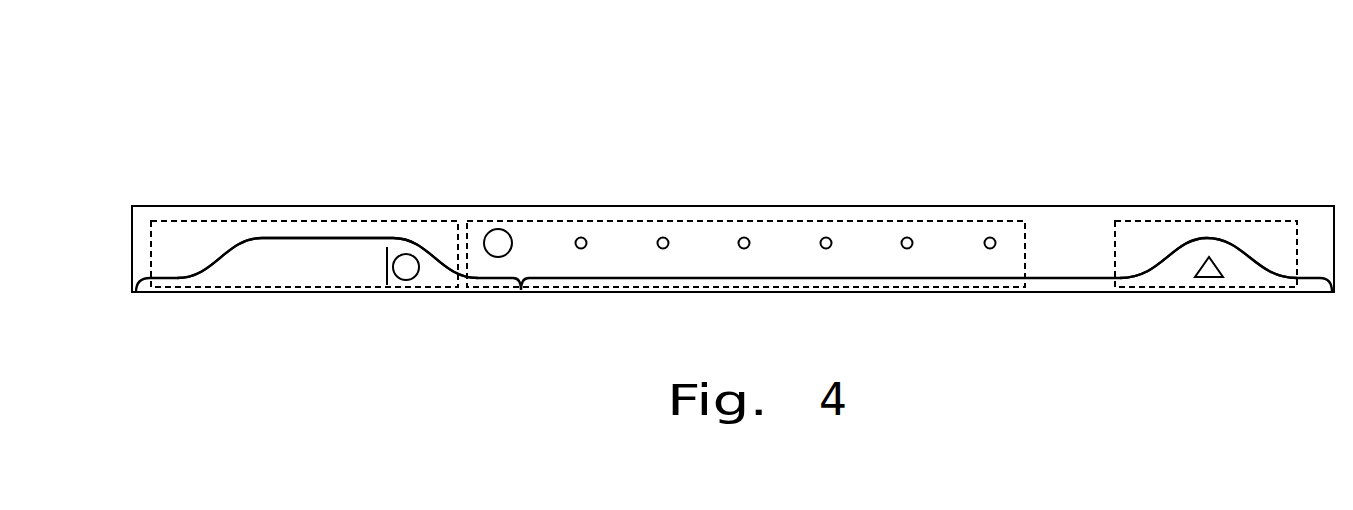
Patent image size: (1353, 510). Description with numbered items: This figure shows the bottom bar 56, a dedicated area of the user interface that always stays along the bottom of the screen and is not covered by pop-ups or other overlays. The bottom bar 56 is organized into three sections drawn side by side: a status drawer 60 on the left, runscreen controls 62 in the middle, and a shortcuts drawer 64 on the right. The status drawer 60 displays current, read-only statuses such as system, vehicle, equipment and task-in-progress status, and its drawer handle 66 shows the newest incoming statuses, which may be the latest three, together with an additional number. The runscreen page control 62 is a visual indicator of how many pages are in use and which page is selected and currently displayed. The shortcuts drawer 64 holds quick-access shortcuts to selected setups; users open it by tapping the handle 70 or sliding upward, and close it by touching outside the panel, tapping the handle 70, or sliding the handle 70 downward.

The bottom bar 56 is at (805, 137).
The status drawer 60 is at (250, 220).
The runscreen page control 62 is at (672, 220).
The shortcuts drawer 64 is at (1178, 220).
The drawer handle 66 is at (275, 255).
The handle 70 is at (1230, 265).